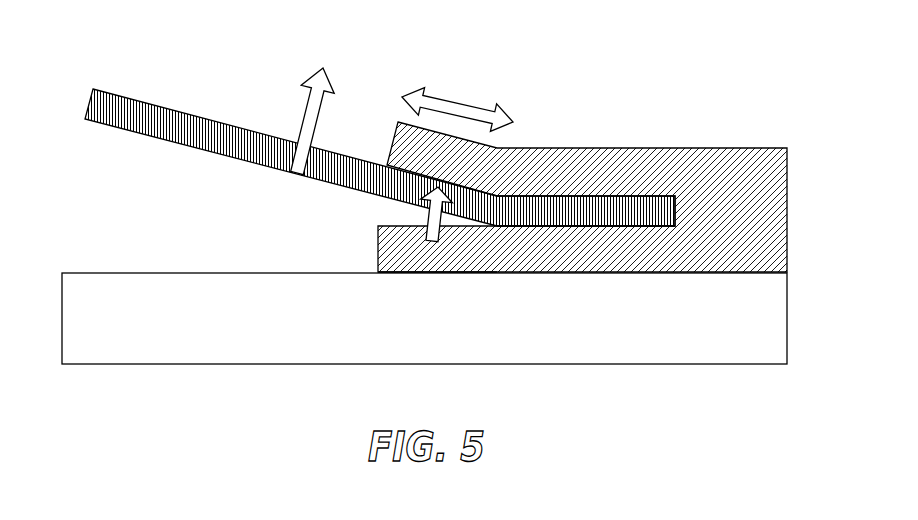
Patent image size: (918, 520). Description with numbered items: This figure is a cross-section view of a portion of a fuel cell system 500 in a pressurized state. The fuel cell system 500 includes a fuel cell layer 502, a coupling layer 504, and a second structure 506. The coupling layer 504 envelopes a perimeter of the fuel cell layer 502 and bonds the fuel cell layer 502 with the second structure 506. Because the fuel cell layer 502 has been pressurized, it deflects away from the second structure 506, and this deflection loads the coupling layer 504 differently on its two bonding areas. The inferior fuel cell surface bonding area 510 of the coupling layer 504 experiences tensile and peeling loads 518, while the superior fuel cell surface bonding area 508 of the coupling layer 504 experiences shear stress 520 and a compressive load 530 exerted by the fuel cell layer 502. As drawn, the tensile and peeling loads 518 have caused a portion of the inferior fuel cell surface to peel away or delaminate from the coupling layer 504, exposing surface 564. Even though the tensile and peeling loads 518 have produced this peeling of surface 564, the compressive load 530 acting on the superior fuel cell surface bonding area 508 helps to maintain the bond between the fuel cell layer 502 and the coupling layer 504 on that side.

The fuel cell system 500 is at (688, 26).
The fuel cell layer 502 is at (92, 101).
The coupling layer 504 is at (725, 150).
The second structure 506 is at (76, 323).
The superior fuel cell surface bonding area 508 is at (405, 157).
The inferior fuel cell surface bonding area 510 is at (557, 227).
The tensile and peeling loads 518 is at (308, 112).
The shear stress 520 is at (462, 103).
The compressive load 530 is at (429, 211).
The exposed surface 564 is at (455, 248).